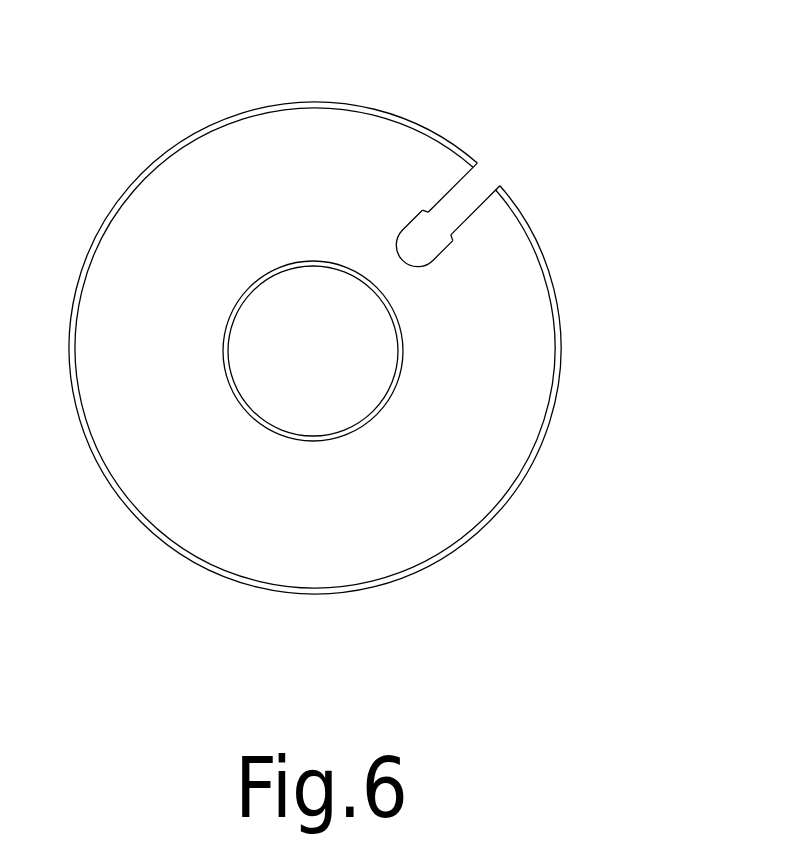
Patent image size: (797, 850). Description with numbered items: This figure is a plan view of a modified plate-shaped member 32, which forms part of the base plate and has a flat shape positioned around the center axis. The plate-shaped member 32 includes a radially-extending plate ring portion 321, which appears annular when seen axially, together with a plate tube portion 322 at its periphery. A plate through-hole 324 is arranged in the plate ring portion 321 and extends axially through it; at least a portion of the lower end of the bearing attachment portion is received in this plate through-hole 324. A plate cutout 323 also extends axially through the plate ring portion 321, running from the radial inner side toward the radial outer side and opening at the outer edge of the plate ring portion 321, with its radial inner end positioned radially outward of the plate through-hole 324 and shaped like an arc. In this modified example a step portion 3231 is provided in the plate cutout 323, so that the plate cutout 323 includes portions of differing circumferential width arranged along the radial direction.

The plate-shaped member 32 is at (392, 354).
The plate ring portion 321 is at (513, 401).
The plate tube portion 322 is at (542, 263).
The plate cutout 323 is at (473, 192).
The step portion 3231 is at (426, 212).
The plate through-hole 324 is at (278, 325).